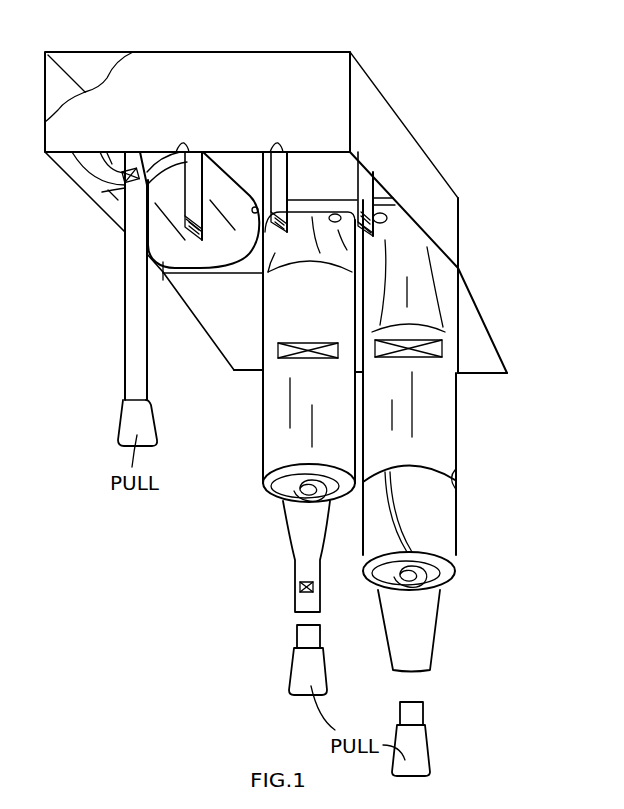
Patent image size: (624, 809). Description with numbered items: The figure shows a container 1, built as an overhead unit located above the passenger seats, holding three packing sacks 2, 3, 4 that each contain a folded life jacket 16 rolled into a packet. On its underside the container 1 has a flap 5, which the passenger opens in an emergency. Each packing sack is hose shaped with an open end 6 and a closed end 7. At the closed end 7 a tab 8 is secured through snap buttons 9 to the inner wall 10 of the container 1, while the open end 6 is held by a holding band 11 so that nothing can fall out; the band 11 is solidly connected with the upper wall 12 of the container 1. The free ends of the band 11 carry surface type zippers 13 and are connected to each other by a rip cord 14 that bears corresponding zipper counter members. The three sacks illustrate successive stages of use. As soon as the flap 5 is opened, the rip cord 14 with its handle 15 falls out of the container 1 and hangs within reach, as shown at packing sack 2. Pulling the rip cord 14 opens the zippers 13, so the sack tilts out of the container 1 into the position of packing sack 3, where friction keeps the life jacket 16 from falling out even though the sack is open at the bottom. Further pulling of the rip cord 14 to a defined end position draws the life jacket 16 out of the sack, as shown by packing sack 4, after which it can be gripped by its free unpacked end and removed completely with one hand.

The container 1 is at (416, 50).
The packing sack 2 is at (240, 216).
The packing sack 3 is at (272, 395).
The packing sack 4 is at (443, 388).
The flap 5 is at (478, 340).
The open end 6 is at (83, 152).
The closed end 7 is at (167, 274).
The tab 8 is at (255, 207).
The snap buttons 9 is at (336, 212).
The inner wall 10 is at (247, 272).
The holding band 11 is at (375, 156).
The upper wall 12 is at (87, 68).
The surface type zipper 13 is at (258, 248).
The rip cord 14 is at (130, 268).
The handle 15 is at (122, 412).
The folded life jacket 16 is at (426, 502).